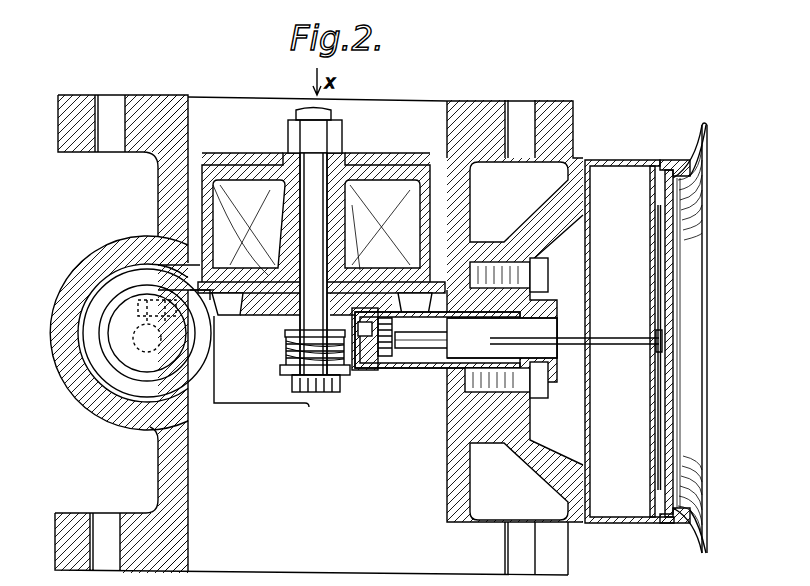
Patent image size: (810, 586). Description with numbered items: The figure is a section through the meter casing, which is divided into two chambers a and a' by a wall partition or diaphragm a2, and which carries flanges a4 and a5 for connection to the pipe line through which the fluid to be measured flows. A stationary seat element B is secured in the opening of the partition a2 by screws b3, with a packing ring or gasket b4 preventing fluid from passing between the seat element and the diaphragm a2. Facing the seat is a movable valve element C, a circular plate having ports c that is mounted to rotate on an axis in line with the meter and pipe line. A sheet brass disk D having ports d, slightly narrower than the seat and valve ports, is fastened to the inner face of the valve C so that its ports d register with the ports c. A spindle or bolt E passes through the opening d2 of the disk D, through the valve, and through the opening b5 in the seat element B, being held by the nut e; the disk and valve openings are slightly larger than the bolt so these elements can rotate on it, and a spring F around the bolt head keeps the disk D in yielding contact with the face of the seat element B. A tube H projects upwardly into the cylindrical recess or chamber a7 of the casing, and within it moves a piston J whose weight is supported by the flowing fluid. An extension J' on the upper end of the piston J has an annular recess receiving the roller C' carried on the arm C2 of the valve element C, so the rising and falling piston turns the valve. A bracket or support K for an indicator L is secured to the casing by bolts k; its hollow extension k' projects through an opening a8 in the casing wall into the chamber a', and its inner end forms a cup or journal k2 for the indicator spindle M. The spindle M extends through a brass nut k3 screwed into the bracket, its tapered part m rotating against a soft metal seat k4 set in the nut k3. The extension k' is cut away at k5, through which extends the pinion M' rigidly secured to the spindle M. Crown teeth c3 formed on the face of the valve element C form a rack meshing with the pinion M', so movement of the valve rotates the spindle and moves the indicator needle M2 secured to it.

The chamber a is at (319, 335).
The chamber a' is at (318, 415).
The wall partition or diaphragm a2 is at (500, 240).
The flange a4 is at (573, 128).
The flange a5 is at (570, 562).
The cylindrical recess or chamber a7 is at (122, 412).
The opening a8 is at (455, 400).
The stationary seat element B is at (240, 230).
The screws or fastening means b3 is at (470, 205).
The packing ring or gasket b4 is at (468, 232).
The opening b5 is at (358, 208).
The movable valve element C is at (321, 254).
The roller C' is at (120, 278).
The extension or arm C2 is at (185, 272).
The ports c is at (322, 304).
The crown teeth c3 is at (365, 282).
The disk D is at (257, 275).
The orifices or ports d is at (222, 282).
The opening d2 is at (272, 275).
The spindle or bolt E is at (285, 338).
The nut e is at (288, 130).
The spring F is at (290, 368).
The tube H is at (100, 372).
The movable element or piston J is at (162, 338).
The extension J' is at (154, 332).
The bracket or support K is at (538, 470).
The bolts k is at (518, 316).
The hollow extension k' is at (414, 404).
The cup or journal k2 is at (352, 372).
The brass nut k3 is at (552, 288).
The soft metal seat k4 is at (548, 340).
The cut-away k5 is at (435, 330).
The indicator L is at (637, 326).
The indicator spindle M is at (576, 325).
The gear or pinion M' is at (436, 356).
The indicator needle M2 is at (656, 262).
The tapered part m is at (444, 336).